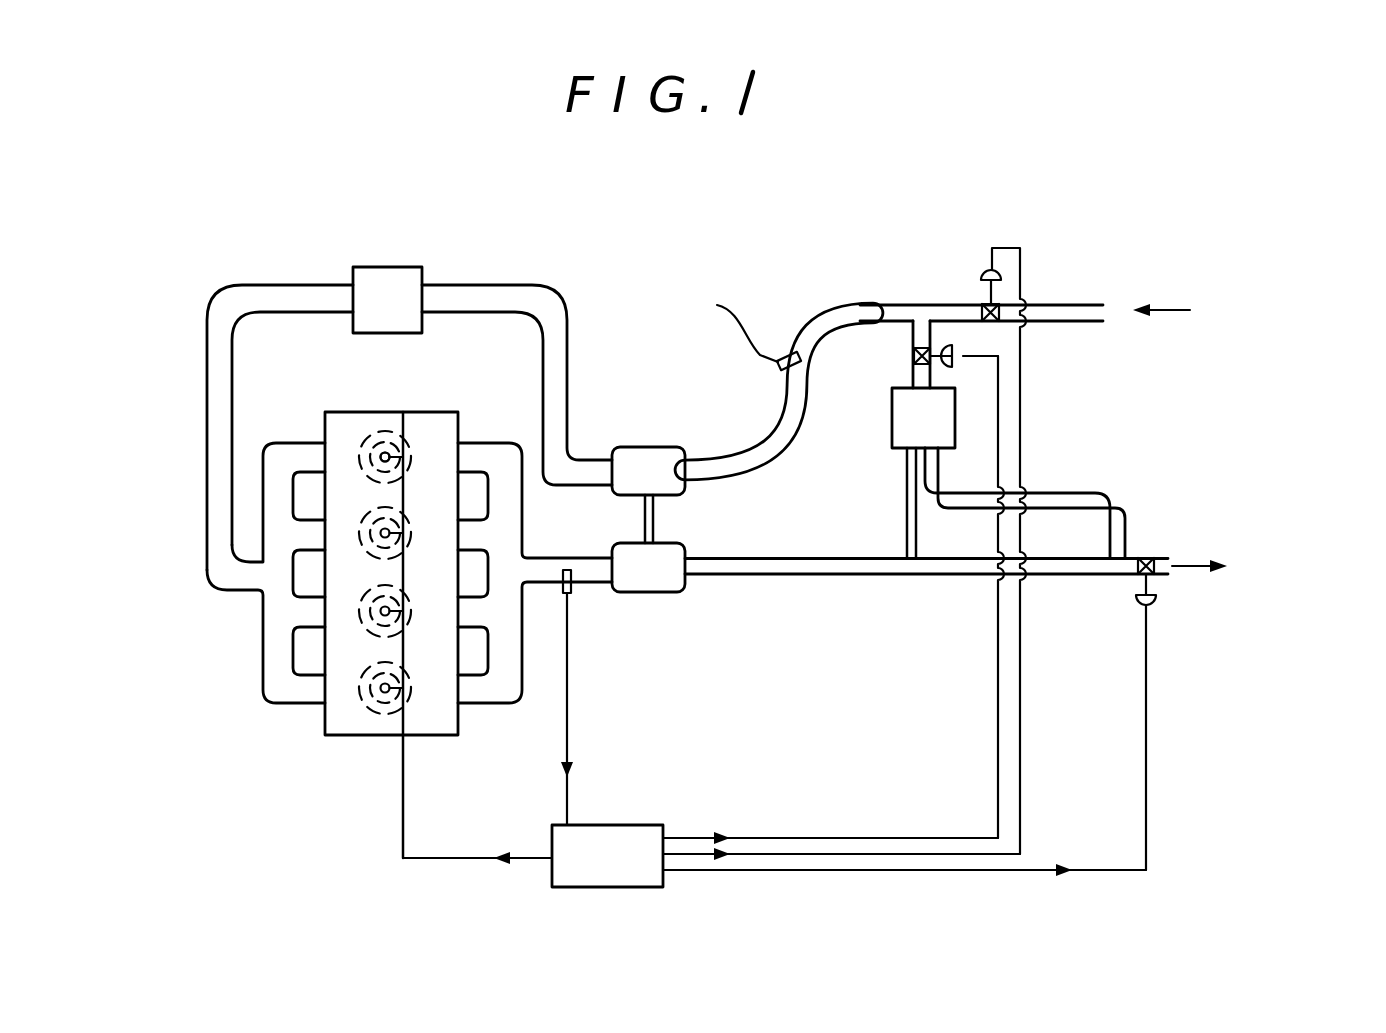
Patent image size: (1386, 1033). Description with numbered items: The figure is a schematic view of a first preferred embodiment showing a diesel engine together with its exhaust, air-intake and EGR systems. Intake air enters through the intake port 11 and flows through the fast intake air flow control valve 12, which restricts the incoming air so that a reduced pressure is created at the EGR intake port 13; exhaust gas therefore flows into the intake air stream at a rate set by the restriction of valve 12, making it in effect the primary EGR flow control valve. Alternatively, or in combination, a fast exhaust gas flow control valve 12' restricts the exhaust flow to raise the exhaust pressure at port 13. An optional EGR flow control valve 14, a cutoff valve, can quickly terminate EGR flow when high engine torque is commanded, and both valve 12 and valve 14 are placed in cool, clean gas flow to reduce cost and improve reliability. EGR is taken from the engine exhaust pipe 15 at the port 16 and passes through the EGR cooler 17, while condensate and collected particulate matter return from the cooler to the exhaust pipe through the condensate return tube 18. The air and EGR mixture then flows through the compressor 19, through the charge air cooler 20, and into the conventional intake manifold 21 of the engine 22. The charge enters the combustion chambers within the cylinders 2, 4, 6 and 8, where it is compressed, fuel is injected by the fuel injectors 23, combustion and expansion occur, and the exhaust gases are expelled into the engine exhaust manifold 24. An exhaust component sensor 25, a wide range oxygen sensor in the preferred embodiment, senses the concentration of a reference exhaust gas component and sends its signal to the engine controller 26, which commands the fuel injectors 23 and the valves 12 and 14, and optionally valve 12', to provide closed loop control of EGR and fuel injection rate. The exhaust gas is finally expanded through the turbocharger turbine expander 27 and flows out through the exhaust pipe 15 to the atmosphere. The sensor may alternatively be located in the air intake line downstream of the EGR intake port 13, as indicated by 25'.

The cylinder 2 is at (369, 471).
The cylinder 4 is at (369, 549).
The cylinder 6 is at (369, 625).
The cylinder 8 is at (369, 701).
The intake port 11 is at (1108, 303).
The fast intake air flow control valve 12 is at (966, 540).
The fast exhaust gas flow control valve 12' is at (1183, 722).
The EGR intake port 13 is at (922, 322).
The EGR flow control valve 14 is at (963, 367).
The engine exhaust pipe 15 is at (1060, 576).
The port 16 is at (1130, 553).
The EGR cooler 17 is at (895, 420).
The condensate return tube 18 is at (907, 528).
The compressor 19 is at (647, 460).
The charge air cooler 20 is at (388, 272).
The intake manifold 21 is at (285, 455).
The engine 22 is at (381, 736).
The fuel injectors 23 is at (384, 452).
The engine exhaust manifold 24 is at (502, 457).
The exhaust component sensor 25 is at (591, 697).
The exhaust sensor 25' is at (759, 322).
The engine controller 26 is at (600, 833).
The turbocharger turbine expander 27 is at (650, 588).